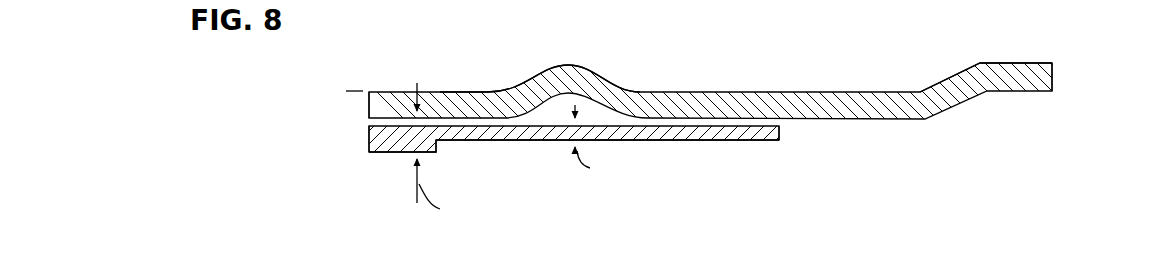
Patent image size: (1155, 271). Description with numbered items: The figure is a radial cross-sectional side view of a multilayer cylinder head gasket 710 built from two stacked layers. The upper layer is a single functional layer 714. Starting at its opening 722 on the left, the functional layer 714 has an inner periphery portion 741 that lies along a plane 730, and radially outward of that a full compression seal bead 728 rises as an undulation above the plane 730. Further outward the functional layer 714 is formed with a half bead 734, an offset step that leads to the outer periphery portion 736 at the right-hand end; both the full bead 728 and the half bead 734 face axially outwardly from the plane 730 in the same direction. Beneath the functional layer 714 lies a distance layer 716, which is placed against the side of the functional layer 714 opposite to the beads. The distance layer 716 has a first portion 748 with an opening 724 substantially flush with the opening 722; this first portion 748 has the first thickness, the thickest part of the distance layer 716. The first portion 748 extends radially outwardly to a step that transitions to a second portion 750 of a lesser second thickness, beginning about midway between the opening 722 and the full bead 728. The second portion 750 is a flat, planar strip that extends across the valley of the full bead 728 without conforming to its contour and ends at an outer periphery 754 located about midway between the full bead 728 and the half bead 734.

The multilayer gasket 710 is at (903, 37).
The functional layer 714 is at (387, 91).
The distance layer 716 is at (395, 153).
The opening 722 is at (368, 104).
The opening 724 is at (368, 137).
The full compression seal bead 728 is at (575, 66).
The plane 730 is at (354, 89).
The half bead 734 is at (1017, 63).
The outer periphery portion 736 is at (1055, 81).
The inner periphery portion 741 is at (455, 91).
The first portion 748 is at (377, 153).
The second portion 750 is at (498, 142).
The outer periphery 754 is at (786, 142).